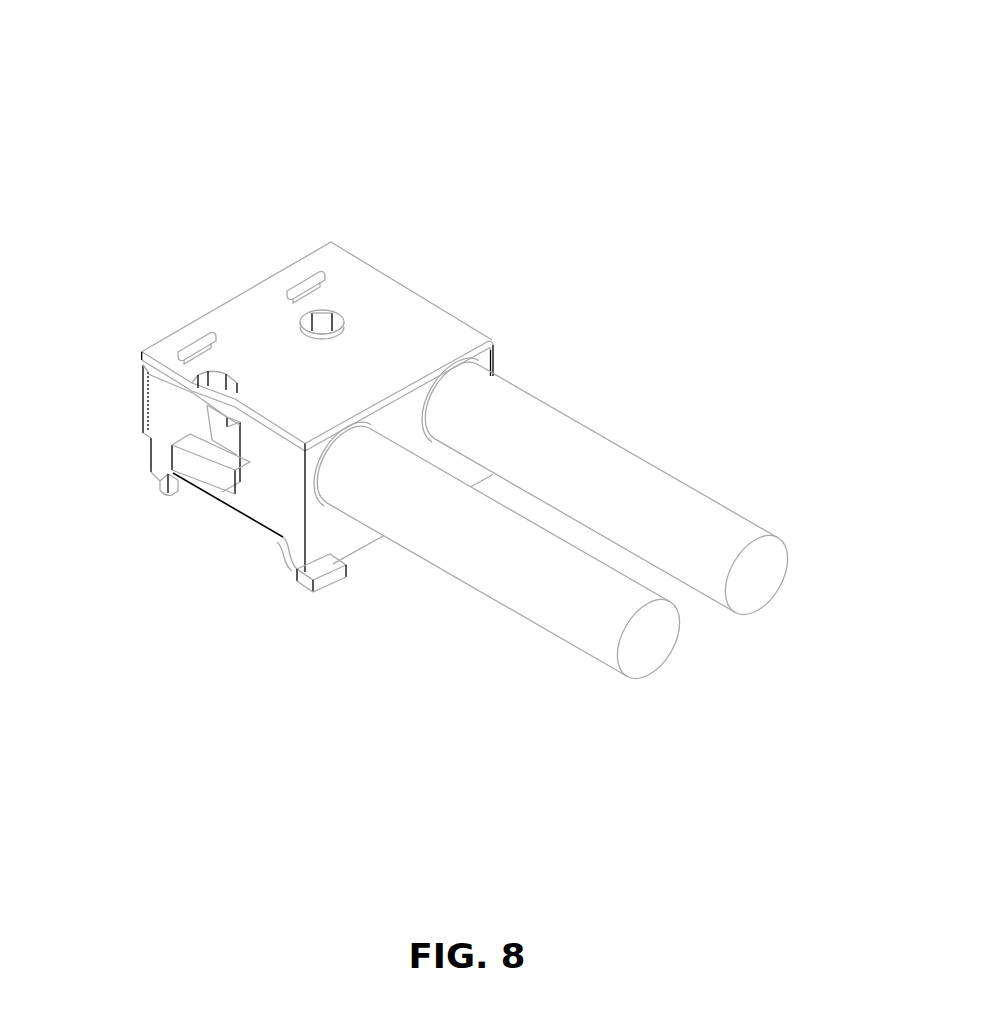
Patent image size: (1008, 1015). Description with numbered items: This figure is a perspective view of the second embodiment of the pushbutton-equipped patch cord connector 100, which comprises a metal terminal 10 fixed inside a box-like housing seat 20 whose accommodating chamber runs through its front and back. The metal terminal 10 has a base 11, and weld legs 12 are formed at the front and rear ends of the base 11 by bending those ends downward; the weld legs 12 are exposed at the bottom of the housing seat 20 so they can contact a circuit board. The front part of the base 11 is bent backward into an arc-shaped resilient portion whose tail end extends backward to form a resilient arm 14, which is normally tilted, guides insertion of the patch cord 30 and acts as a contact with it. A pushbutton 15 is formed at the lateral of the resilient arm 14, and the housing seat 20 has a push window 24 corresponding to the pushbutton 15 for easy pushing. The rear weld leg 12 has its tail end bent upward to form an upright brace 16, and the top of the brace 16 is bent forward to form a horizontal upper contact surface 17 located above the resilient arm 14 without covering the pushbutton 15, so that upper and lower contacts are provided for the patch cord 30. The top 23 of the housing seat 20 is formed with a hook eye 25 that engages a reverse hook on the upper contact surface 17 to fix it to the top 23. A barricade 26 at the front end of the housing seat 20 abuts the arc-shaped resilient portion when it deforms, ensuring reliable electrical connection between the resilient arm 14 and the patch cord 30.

The pushbutton-equipped patch cord connector 100 is at (306, 125).
The pushbutton-equipped patch cord connecting metal terminal 10 is at (80, 585).
The base 11 is at (190, 495).
The weld legs 12 is at (165, 486).
The resilient arm 14 is at (210, 407).
The pushbutton 15 is at (225, 450).
The upright brace 16 is at (145, 437).
The upper contact surface 17 is at (168, 372).
The housing seat 20 is at (457, 130).
The top 23 is at (445, 325).
The push window 24 is at (330, 328).
The hook eye 25 is at (317, 272).
The barricade 26 is at (465, 468).
The patch cord 30 is at (523, 572).